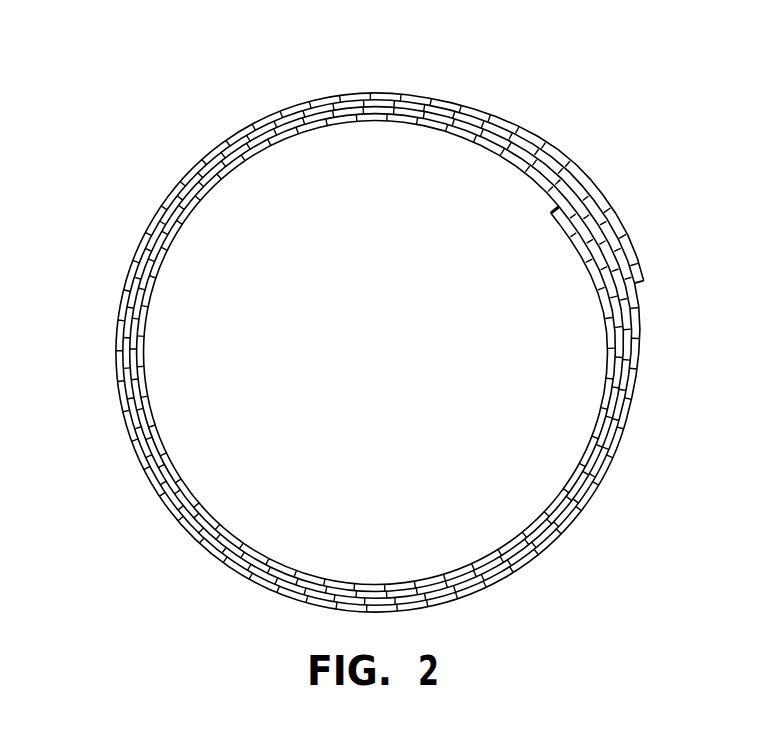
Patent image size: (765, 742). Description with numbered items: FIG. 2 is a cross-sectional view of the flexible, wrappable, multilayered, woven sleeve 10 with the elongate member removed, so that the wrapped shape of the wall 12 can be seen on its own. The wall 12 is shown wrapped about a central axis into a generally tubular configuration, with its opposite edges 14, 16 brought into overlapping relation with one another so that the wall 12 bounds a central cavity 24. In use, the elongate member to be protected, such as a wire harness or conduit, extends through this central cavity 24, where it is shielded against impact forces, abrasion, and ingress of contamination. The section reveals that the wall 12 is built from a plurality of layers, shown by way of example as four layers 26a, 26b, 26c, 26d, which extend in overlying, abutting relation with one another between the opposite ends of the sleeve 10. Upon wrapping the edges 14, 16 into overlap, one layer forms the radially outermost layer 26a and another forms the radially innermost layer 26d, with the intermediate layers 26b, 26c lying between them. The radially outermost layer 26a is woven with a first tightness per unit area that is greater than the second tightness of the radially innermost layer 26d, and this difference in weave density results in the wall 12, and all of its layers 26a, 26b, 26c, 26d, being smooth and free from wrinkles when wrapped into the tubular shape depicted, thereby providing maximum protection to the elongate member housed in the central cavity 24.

The sleeve 10 is at (624, 114).
The wall 12 is at (421, 90).
The opposite edge 14 is at (559, 206).
The opposite edge 16 is at (644, 281).
The central cavity 24 is at (391, 371).
The radially outermost layer 26a is at (168, 208).
The layer 26b is at (136, 259).
The layer 26c is at (121, 344).
The radially innermost layer 26d is at (138, 444).